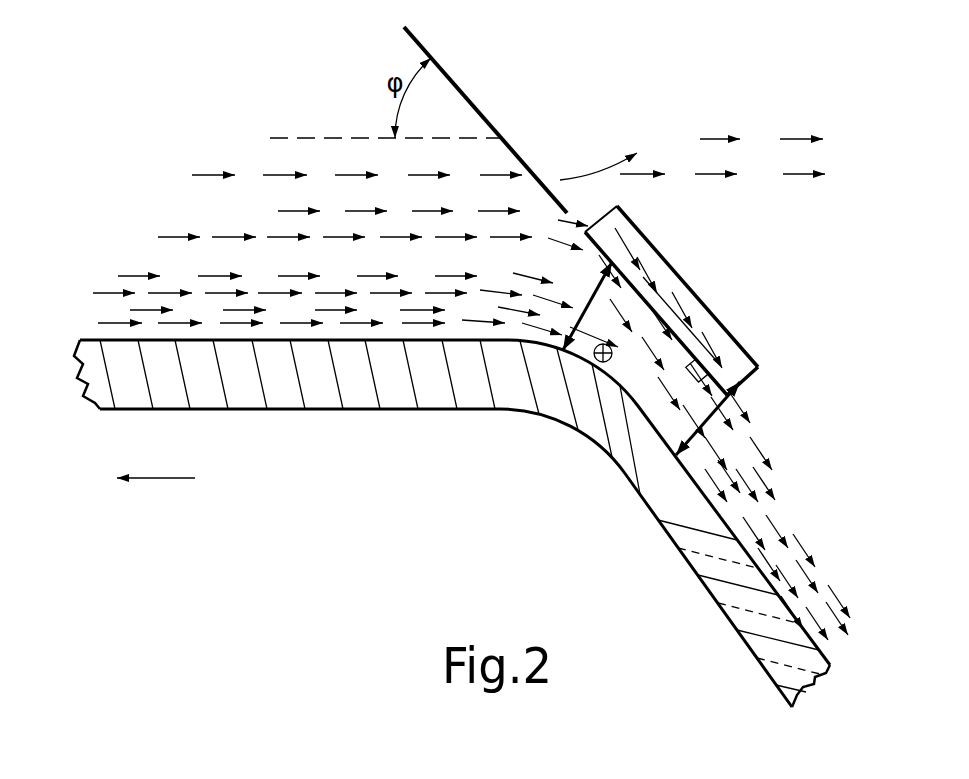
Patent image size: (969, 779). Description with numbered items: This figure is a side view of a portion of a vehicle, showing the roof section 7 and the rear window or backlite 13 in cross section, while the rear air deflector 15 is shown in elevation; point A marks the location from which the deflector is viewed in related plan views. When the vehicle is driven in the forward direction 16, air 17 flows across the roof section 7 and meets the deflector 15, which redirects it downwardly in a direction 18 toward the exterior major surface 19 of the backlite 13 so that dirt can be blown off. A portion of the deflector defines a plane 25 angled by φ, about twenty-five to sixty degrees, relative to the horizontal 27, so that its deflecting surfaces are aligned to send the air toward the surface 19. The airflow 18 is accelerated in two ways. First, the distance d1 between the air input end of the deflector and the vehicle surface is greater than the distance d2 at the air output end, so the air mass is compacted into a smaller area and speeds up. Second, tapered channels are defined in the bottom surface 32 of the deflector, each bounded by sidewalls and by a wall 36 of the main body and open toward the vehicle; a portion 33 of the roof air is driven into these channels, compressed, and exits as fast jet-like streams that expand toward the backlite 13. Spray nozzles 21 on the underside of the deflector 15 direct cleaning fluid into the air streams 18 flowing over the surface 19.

The roof section 7 is at (417, 409).
The backlite 13 is at (708, 566).
The rear air deflector 15 is at (724, 284).
The forward direction 16 is at (162, 479).
The air 17 is at (283, 276).
The airflow direction 18 is at (645, 280).
The exterior major surface 19 is at (778, 592).
The spray nozzles 21 is at (715, 360).
The plane 25 is at (518, 152).
The horizontal 27 is at (333, 138).
The bottom surface 32 is at (738, 310).
The portion of air 33 is at (586, 228).
The wall 36 is at (587, 236).
The distance d1 is at (605, 345).
The distance d2 is at (678, 452).
The point A is at (598, 367).